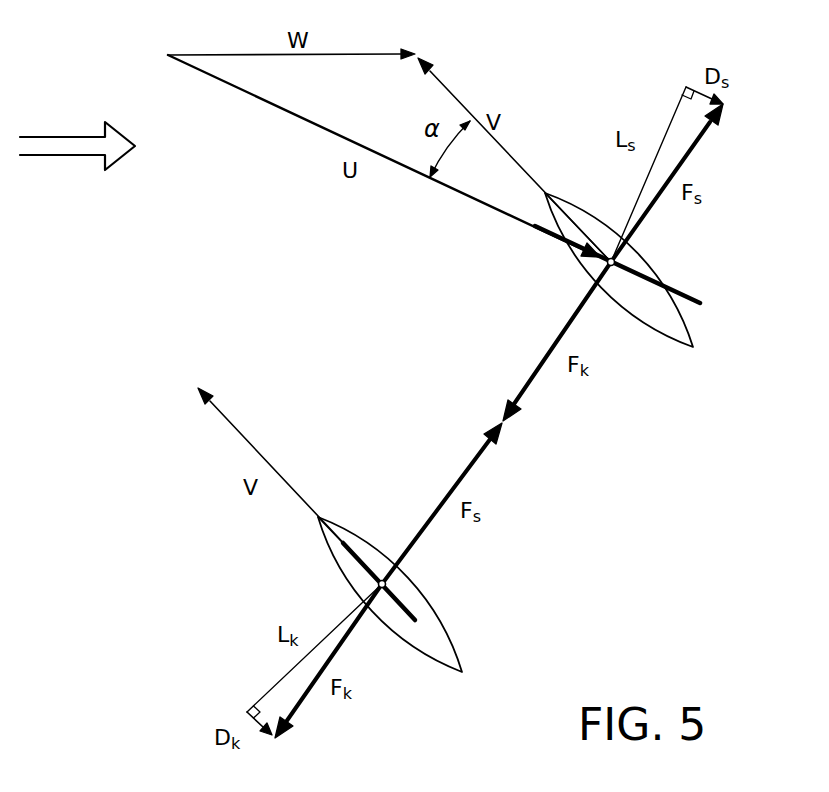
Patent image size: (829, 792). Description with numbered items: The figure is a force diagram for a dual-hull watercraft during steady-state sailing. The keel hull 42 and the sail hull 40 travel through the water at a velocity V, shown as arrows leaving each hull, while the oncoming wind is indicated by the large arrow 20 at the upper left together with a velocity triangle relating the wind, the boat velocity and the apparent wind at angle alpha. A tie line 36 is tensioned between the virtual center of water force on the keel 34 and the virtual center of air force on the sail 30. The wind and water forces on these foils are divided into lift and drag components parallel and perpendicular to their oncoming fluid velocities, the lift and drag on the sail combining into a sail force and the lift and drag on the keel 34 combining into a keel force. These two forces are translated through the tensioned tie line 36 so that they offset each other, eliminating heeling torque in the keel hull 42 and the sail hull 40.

The wind direction arrow 20 is at (60, 137).
The sail 30 is at (683, 289).
The keel 34 is at (366, 556).
The tie line 36 is at (498, 420).
The sail hull 40 is at (677, 332).
The keel hull 42 is at (442, 645).